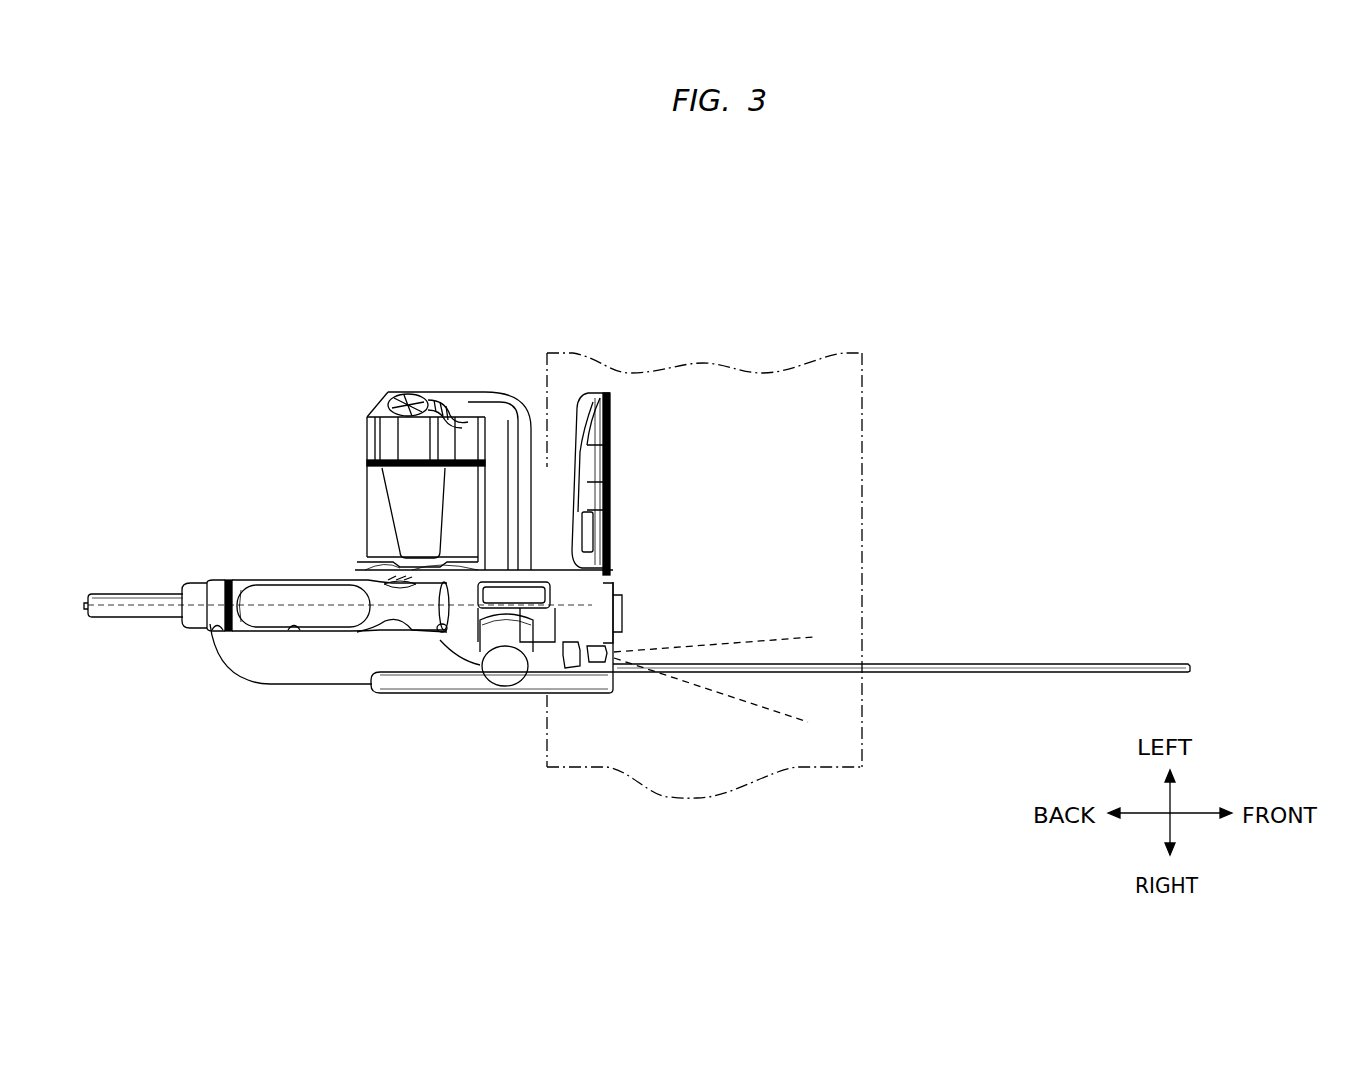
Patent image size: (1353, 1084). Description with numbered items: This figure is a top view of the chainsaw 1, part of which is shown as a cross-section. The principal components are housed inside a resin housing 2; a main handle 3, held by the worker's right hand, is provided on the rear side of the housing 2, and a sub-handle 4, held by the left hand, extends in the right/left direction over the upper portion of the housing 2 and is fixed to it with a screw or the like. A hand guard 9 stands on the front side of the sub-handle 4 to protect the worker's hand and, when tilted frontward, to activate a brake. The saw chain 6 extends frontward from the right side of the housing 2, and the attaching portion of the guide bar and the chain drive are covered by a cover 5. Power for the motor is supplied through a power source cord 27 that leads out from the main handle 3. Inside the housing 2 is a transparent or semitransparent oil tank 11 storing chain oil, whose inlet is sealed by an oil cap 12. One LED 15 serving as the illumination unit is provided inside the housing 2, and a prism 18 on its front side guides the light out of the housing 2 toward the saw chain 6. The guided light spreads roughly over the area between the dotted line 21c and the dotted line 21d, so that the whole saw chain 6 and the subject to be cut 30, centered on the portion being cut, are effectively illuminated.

The chainsaw 1 is at (1153, 290).
The housing 2 is at (400, 648).
The main handle 3 is at (267, 592).
The sub-handle 4 is at (503, 445).
The cover 5 is at (393, 684).
The saw chain 6 is at (1025, 664).
The hand guard 9 is at (600, 458).
The oil tank 11 is at (538, 577).
The oil cap 12 is at (502, 673).
The LED 15 is at (576, 645).
The prism 18 is at (587, 655).
The dotted line 21c is at (808, 722).
The dotted line 21d is at (813, 637).
The power source cord 27 is at (91, 593).
The subject to be cut 30 is at (847, 474).